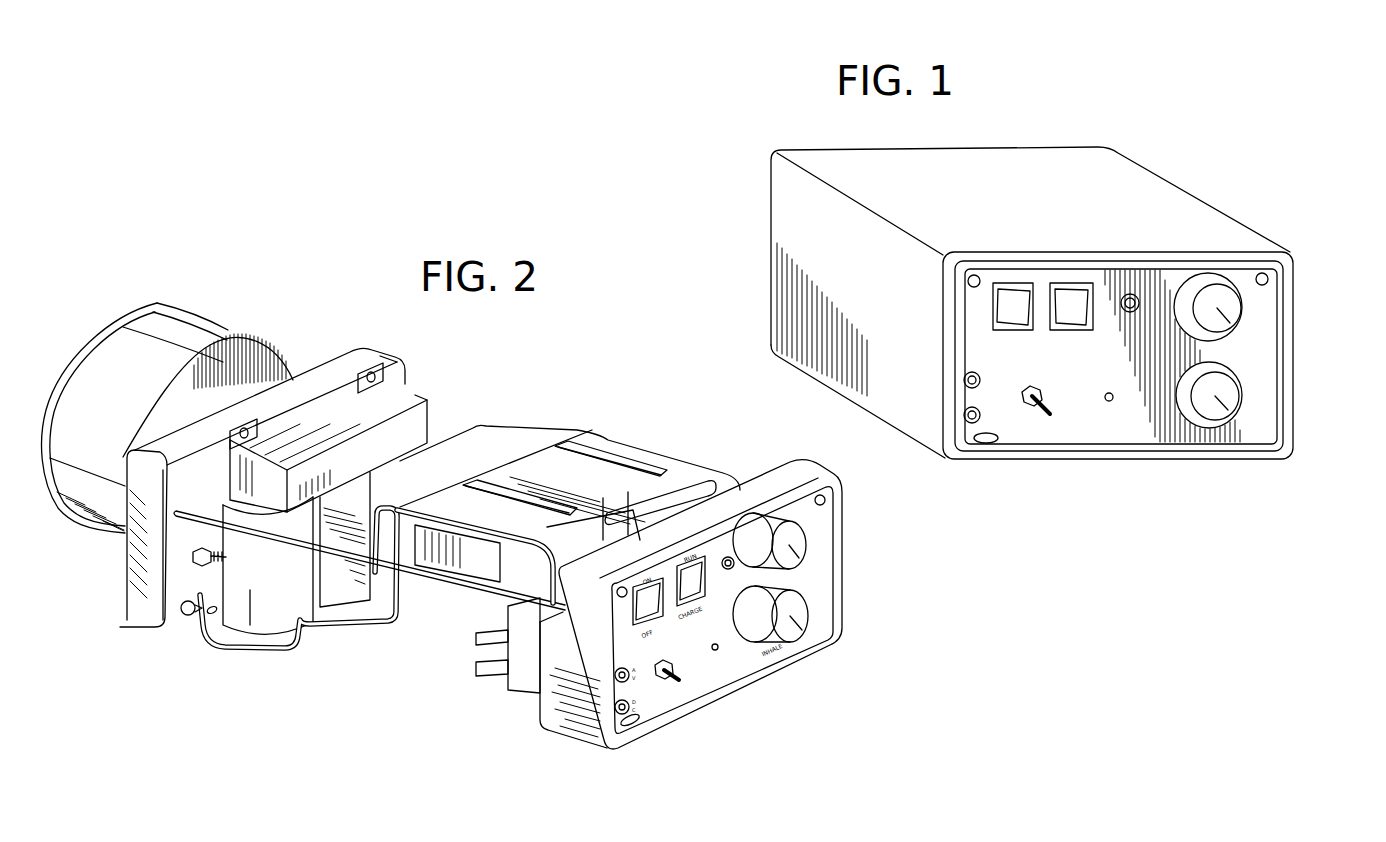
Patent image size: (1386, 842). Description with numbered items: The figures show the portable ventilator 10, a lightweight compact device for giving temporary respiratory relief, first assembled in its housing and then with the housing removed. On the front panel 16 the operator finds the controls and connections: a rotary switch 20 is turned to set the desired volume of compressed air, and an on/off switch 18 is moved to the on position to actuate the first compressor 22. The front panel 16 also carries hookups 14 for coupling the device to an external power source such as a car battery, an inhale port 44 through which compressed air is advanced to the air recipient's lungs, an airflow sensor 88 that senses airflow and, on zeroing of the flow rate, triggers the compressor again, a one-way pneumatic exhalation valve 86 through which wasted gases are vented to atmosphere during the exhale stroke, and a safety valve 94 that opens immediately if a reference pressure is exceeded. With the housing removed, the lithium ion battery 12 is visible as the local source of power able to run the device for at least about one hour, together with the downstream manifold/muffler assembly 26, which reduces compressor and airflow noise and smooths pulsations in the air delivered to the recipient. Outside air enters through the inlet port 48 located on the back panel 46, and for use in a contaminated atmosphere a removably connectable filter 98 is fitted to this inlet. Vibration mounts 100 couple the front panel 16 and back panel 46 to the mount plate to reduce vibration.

In FIG. 1, the portable ventilator 10 is at (1020, 191).
In FIG. 2, the lithium ion battery 12 is at (396, 400).
In FIG. 1, the hookups 14 is at (990, 443).
In FIG. 1, the front panel 16 is at (1168, 440).
In FIG. 1, the on/off switch 18 is at (1002, 310).
In FIG. 1, the rotary switch 20 is at (1234, 305).
In FIG. 2, the rotary switch 20 is at (802, 540).
In FIG. 2, the first compressor 22 is at (503, 444).
In FIG. 2, the downstream manifold/muffler assembly 26 is at (507, 697).
In FIG. 1, the inhale port 44 is at (1226, 398).
In FIG. 2, the inhale port 44 is at (804, 618).
In FIG. 2, the back panel 46 is at (370, 357).
In FIG. 2, the inlet port 48 is at (300, 364).
In FIG. 1, the exhalation valve 86 is at (1052, 420).
In FIG. 2, the exhalation valve 86 is at (653, 673).
In FIG. 1, the airflow sensor 88 is at (1131, 295).
In FIG. 1, the safety valve 94 is at (1111, 402).
In FIG. 2, the safety valve 94 is at (715, 655).
In FIG. 2, the filter 98 is at (103, 490).
In FIG. 2, the vibration mounts 100 is at (190, 618).